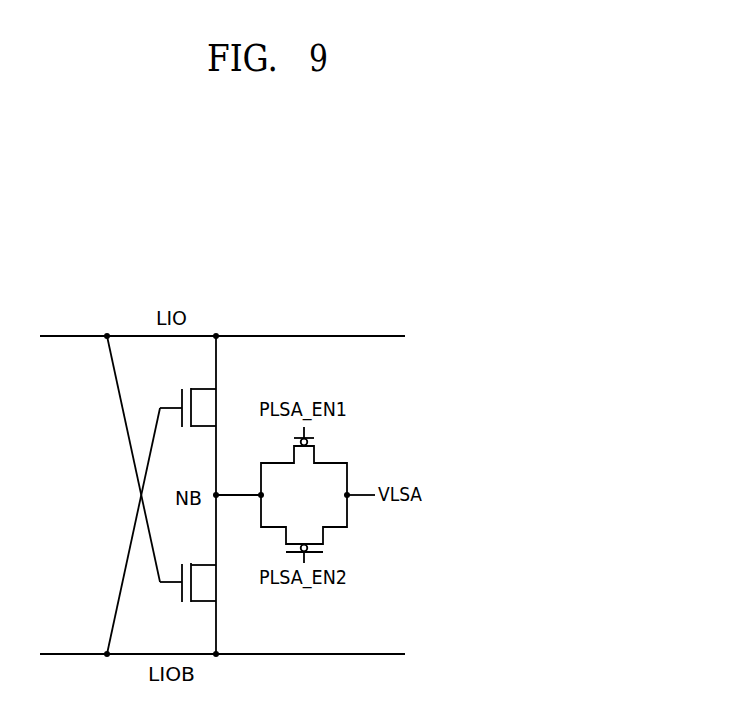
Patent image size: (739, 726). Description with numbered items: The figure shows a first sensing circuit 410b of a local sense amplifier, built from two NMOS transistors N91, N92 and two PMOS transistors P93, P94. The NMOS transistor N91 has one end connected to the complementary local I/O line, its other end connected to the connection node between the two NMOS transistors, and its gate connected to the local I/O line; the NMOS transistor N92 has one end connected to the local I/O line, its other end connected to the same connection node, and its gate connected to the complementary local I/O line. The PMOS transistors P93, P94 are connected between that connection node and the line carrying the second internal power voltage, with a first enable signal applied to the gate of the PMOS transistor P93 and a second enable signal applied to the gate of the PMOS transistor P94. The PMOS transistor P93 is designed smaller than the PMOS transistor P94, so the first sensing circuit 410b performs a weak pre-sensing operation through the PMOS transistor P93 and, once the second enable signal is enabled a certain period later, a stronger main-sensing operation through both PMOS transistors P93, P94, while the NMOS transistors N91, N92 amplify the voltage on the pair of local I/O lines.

The first sensing circuit 410b is at (420, 274).
The NMOS transistor N91 is at (202, 582).
The NMOS transistor N92 is at (203, 407).
The PMOS transistor P93 is at (304, 461).
The PMOS transistor P94 is at (304, 529).